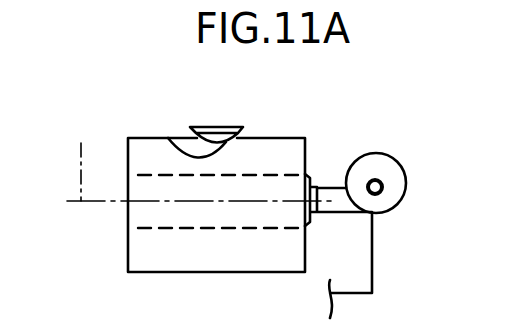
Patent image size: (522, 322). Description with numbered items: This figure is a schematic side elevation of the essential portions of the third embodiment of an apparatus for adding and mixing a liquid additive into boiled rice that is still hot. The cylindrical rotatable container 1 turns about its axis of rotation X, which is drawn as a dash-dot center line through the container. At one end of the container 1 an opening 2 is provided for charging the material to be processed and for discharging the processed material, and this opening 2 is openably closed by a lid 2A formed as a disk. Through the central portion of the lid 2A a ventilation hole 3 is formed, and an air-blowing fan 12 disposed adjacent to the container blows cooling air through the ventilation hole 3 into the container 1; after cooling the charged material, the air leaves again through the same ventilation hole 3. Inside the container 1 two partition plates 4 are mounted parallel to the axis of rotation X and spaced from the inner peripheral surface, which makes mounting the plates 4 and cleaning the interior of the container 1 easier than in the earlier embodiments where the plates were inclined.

The rotatable container 1 is at (292, 137).
The opening 2 is at (180, 150).
The lid 2A is at (223, 125).
The ventilation hole 3 is at (319, 213).
The partition plates 4 is at (157, 228).
The air-blowing fan 12 is at (385, 168).
The axis of rotation X is at (79, 159).